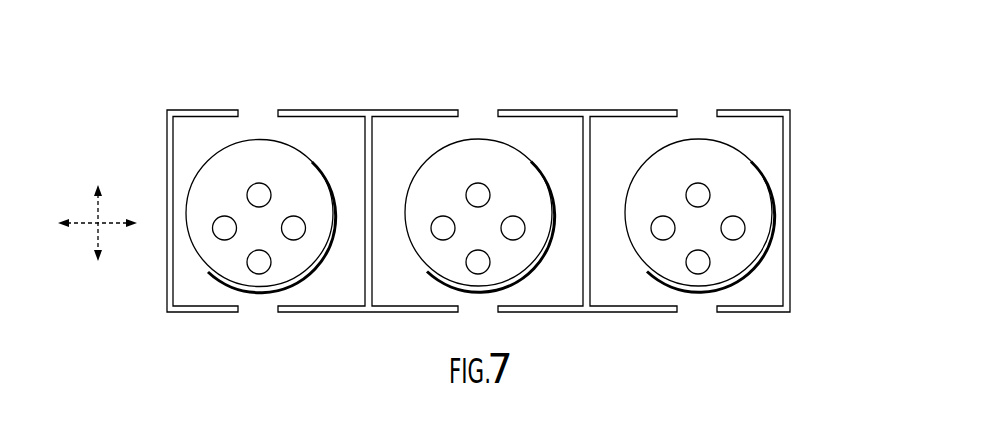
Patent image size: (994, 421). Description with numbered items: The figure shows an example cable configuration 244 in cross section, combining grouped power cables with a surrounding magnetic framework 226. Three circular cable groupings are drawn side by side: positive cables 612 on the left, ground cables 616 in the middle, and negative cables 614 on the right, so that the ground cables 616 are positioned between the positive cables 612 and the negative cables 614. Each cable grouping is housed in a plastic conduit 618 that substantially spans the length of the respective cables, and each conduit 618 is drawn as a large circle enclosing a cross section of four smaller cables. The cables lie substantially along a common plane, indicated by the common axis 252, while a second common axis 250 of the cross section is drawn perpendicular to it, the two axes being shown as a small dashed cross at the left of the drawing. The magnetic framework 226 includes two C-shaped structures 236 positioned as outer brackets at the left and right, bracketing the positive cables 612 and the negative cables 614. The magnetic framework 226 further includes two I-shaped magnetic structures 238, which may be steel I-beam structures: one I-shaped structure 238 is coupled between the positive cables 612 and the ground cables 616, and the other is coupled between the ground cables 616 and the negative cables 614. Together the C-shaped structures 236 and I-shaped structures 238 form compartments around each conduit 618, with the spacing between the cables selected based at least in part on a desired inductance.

The magnetic framework 226 is at (602, 72).
The cable configuration 244 is at (788, 60).
The C-shaped structure 236 is at (182, 110).
The I-shaped magnetic structure 238 is at (390, 110).
The plastic conduit 618 is at (263, 139).
The positive cables 612 is at (242, 240).
The ground cables 616 is at (461, 240).
The negative cables 614 is at (681, 240).
The common axis 250 is at (90, 207).
The common axis 252 is at (106, 224).